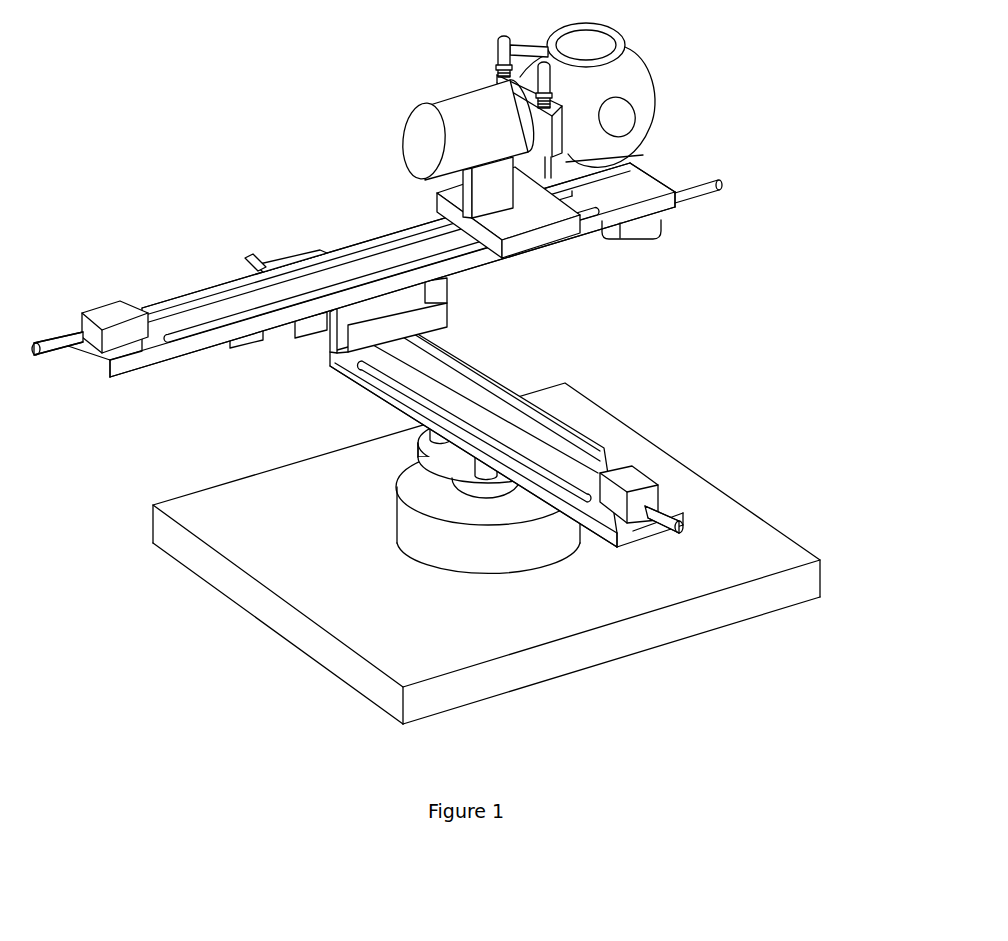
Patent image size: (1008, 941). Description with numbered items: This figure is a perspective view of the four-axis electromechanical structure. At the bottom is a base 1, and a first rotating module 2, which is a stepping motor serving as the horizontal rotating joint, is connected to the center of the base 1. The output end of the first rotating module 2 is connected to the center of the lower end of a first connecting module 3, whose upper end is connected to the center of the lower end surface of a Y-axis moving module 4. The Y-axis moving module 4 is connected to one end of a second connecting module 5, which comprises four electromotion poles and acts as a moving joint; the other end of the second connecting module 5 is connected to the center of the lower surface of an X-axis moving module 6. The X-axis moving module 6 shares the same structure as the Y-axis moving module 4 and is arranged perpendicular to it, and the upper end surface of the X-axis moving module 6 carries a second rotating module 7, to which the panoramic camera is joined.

The base 1 is at (524, 553).
The first rotating module 2 is at (530, 602).
The first connecting module 3 is at (355, 524).
The Y-axis moving module 4 is at (506, 433).
The second connecting module 5 is at (392, 315).
The X-axis moving module 6 is at (377, 252).
The second rotating module 7 is at (481, 137).